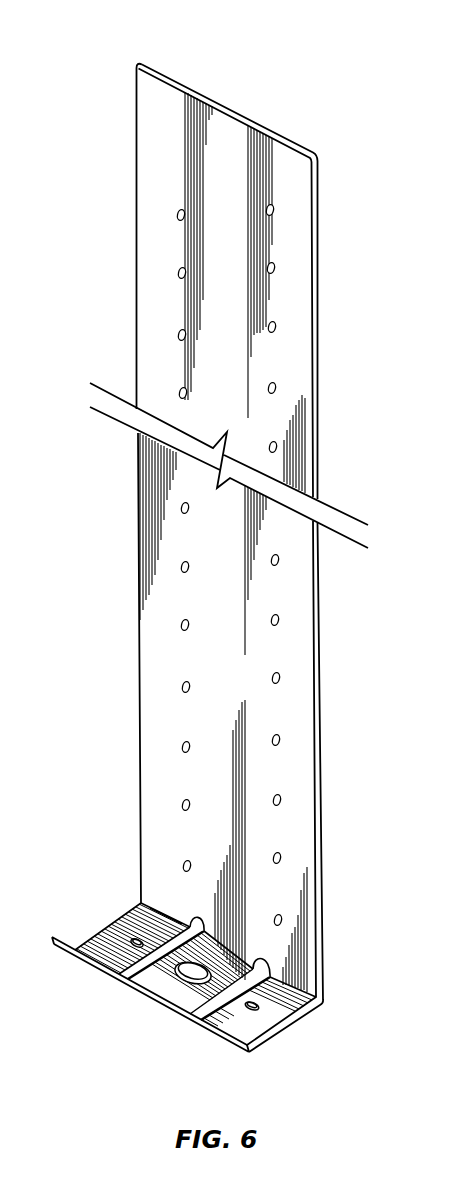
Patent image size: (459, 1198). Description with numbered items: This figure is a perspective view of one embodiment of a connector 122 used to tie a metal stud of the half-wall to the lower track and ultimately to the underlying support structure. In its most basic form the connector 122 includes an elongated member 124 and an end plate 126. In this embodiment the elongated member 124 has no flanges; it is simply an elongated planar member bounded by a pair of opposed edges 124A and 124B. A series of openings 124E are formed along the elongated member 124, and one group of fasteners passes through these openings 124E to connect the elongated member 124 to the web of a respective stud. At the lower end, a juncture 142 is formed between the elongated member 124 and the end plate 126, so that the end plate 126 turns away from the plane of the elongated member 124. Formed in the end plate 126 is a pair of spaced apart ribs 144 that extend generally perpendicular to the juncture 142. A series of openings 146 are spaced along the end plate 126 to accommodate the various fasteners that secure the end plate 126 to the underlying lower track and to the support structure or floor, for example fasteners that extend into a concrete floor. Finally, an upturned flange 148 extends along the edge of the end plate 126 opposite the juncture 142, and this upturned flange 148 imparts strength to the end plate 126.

The connector 122 is at (260, 94).
The elongated member 124 is at (284, 358).
The opposed edge 124A is at (136, 232).
The opposed edge 124B is at (316, 301).
The openings 124E is at (268, 566).
The end plate 126 is at (246, 1020).
The juncture 142 is at (167, 917).
The ribs 144 is at (163, 945).
The openings 146 is at (260, 966).
The upturned flange 148 is at (96, 966).